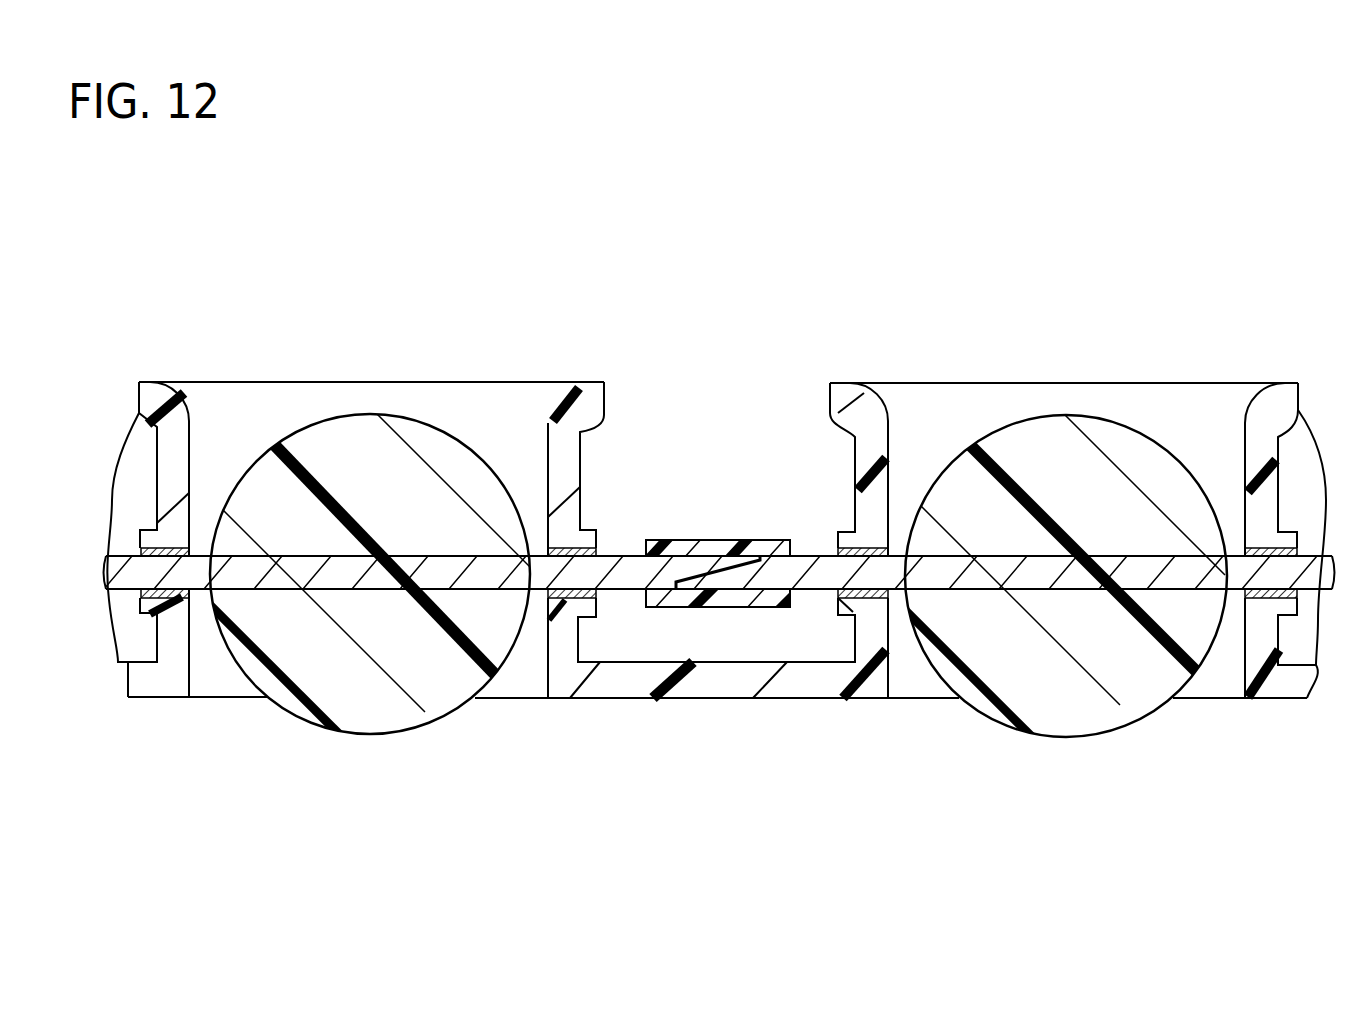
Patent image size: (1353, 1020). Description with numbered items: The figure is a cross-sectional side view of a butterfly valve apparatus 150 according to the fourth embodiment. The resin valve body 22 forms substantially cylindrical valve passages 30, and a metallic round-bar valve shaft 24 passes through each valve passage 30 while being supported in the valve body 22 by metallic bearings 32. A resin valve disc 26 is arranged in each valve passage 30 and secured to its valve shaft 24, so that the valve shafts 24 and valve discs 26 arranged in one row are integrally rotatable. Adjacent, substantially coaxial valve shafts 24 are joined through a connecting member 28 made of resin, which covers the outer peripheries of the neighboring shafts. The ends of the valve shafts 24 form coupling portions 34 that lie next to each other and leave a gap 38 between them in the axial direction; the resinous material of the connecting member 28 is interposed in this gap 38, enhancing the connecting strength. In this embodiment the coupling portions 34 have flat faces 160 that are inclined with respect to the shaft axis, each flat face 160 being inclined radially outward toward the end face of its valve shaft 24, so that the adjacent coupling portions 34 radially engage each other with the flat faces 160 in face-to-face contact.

The butterfly valve apparatus 150 is at (186, 356).
The valve body 22 is at (600, 403).
The valve shaft 24 is at (470, 570).
The valve disc 26 is at (400, 430).
The connecting member 28 is at (783, 592).
The valve passage 30 is at (238, 418).
The bearing 32 is at (182, 598).
The coupling portion 34 is at (710, 548).
The gap 38 is at (755, 548).
The flat face 160 is at (738, 540).